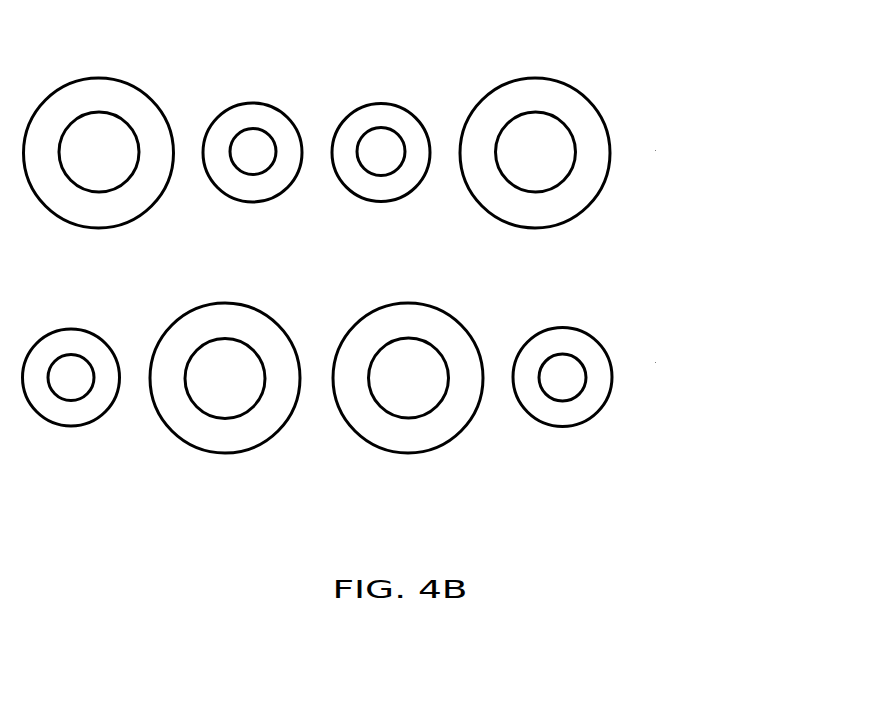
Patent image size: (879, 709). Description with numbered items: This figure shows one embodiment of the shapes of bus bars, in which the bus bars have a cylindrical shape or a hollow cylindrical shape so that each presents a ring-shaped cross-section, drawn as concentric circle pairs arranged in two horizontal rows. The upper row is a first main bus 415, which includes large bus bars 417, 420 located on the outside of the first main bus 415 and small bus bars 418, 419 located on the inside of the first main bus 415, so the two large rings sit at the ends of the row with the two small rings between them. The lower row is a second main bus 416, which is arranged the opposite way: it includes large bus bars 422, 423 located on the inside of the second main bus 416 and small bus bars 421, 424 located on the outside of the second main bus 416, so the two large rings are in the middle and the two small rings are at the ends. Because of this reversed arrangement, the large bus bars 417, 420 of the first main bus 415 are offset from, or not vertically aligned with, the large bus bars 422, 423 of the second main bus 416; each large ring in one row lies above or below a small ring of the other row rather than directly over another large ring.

The first main bus 415 is at (640, 158).
The second main bus 416 is at (640, 370).
The large bus bar 417 is at (98, 78).
The small bus bar 418 is at (252, 103).
The small bus bar 419 is at (380, 103).
The large bus bar 420 is at (534, 78).
The small bus bar 421 is at (71, 427).
The large bus bar 422 is at (225, 453).
The large bus bar 423 is at (408, 453).
The small bus bar 424 is at (562, 426).